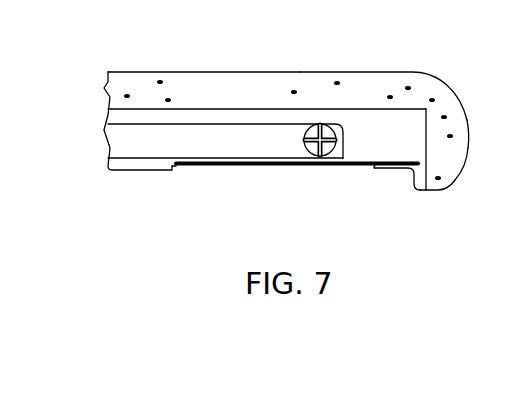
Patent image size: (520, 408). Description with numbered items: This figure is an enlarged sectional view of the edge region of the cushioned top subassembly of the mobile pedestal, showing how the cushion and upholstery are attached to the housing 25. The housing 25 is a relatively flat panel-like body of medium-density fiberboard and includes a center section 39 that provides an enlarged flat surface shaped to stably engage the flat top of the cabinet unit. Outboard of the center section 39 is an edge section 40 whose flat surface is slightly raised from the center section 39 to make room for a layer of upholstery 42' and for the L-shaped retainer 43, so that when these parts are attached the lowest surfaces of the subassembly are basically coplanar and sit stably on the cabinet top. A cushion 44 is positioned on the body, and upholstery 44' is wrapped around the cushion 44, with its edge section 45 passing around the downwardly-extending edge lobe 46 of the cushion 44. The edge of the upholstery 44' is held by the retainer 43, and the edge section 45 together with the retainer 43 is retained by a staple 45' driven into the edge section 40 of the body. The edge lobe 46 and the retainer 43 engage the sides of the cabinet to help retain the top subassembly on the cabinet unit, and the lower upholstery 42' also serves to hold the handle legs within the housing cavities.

The housing 25 is at (180, 96).
The center section 39 is at (160, 164).
The edge section 40 is at (386, 156).
The plate 42' is at (295, 199).
The L-shaped retainer 43 is at (400, 176).
The cushion 44 is at (383, 72).
The upholstery 44' is at (222, 45).
The edge section of upholstery 45 is at (472, 163).
The staple 45' is at (466, 129).
The edge lobe 46 is at (458, 186).